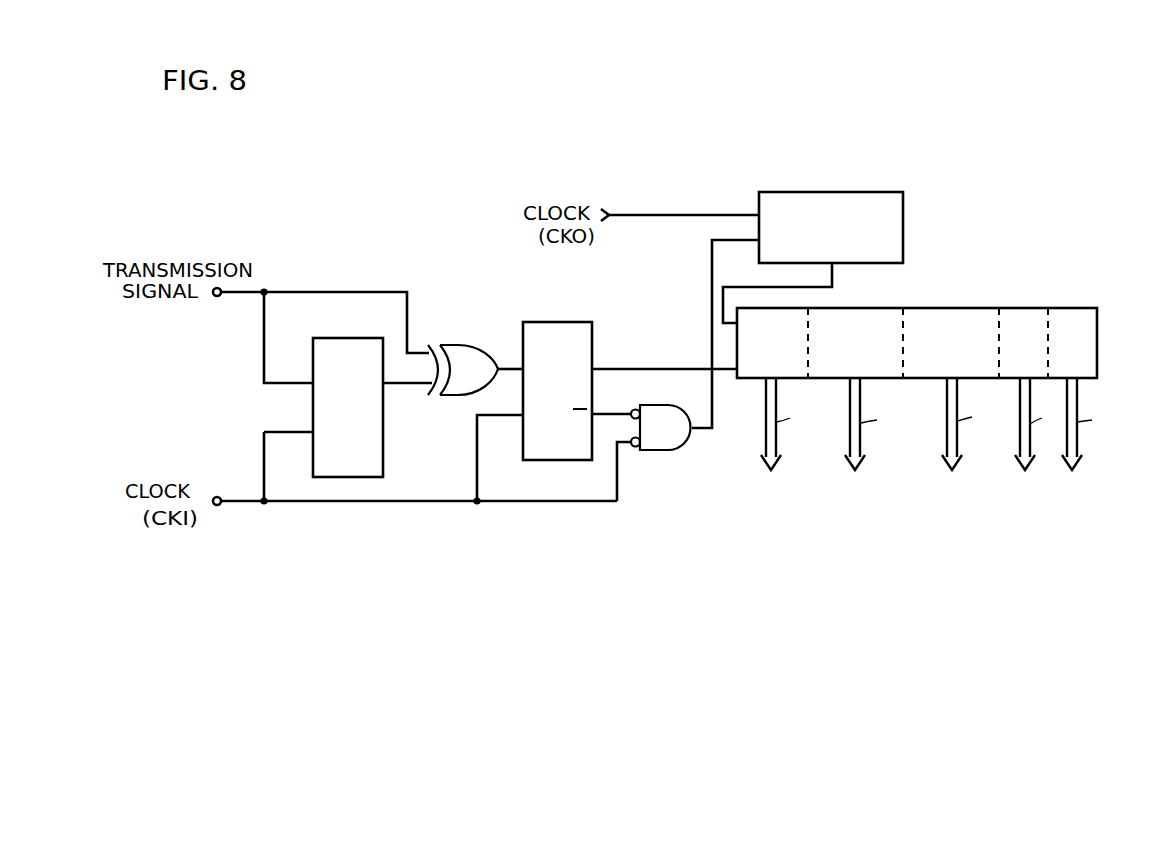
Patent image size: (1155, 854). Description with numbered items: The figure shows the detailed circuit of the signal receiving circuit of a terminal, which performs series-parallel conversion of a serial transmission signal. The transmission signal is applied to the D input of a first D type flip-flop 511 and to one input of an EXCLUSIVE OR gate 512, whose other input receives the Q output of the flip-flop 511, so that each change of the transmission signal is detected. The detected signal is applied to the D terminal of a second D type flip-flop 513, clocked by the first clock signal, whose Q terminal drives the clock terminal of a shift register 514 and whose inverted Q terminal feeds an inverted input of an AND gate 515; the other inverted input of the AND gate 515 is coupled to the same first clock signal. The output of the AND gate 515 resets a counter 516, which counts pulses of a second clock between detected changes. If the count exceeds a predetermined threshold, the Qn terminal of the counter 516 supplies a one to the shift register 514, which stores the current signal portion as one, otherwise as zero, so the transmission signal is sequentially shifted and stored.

The D type flip-flop 511 is at (384, 443).
The EXCLUSIVE OR gate 512 is at (462, 347).
The second D type flip-flop 513 is at (563, 330).
The shift register 514 is at (945, 305).
The AND gate 515 is at (672, 452).
The counter 516 is at (903, 213).